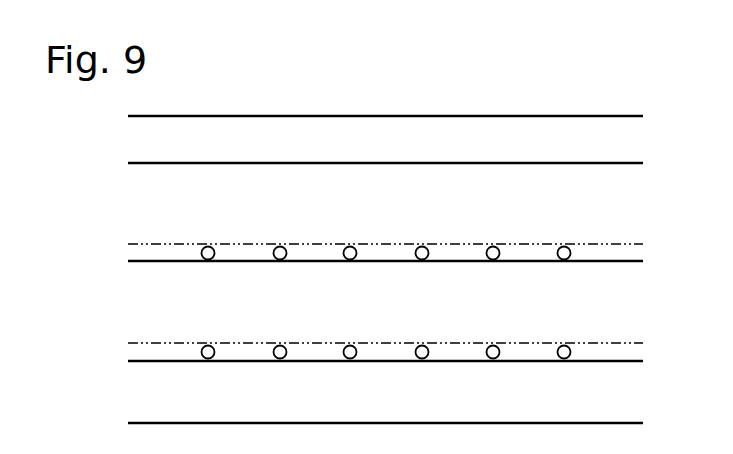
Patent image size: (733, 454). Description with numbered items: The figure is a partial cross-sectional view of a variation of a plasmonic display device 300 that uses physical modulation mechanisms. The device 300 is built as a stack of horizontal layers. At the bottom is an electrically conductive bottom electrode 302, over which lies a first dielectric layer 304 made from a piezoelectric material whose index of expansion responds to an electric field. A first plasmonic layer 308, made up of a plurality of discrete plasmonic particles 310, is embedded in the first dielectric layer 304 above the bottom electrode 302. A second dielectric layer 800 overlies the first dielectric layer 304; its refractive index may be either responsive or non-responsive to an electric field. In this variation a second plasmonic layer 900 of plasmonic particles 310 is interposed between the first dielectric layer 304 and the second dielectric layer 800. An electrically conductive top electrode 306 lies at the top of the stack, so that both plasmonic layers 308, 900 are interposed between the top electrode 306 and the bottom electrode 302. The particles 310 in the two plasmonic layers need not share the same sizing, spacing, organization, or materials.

The plasmonic display device 300 is at (622, 89).
The bottom electrode 302 is at (367, 408).
The first dielectric layer 304 is at (367, 290).
The top electrode 306 is at (367, 148).
The first plasmonic layer 308 is at (133, 351).
The plasmonic particles 310 is at (215, 253).
The second dielectric layer 800 is at (367, 200).
The second plasmonic layer 900 is at (133, 253).